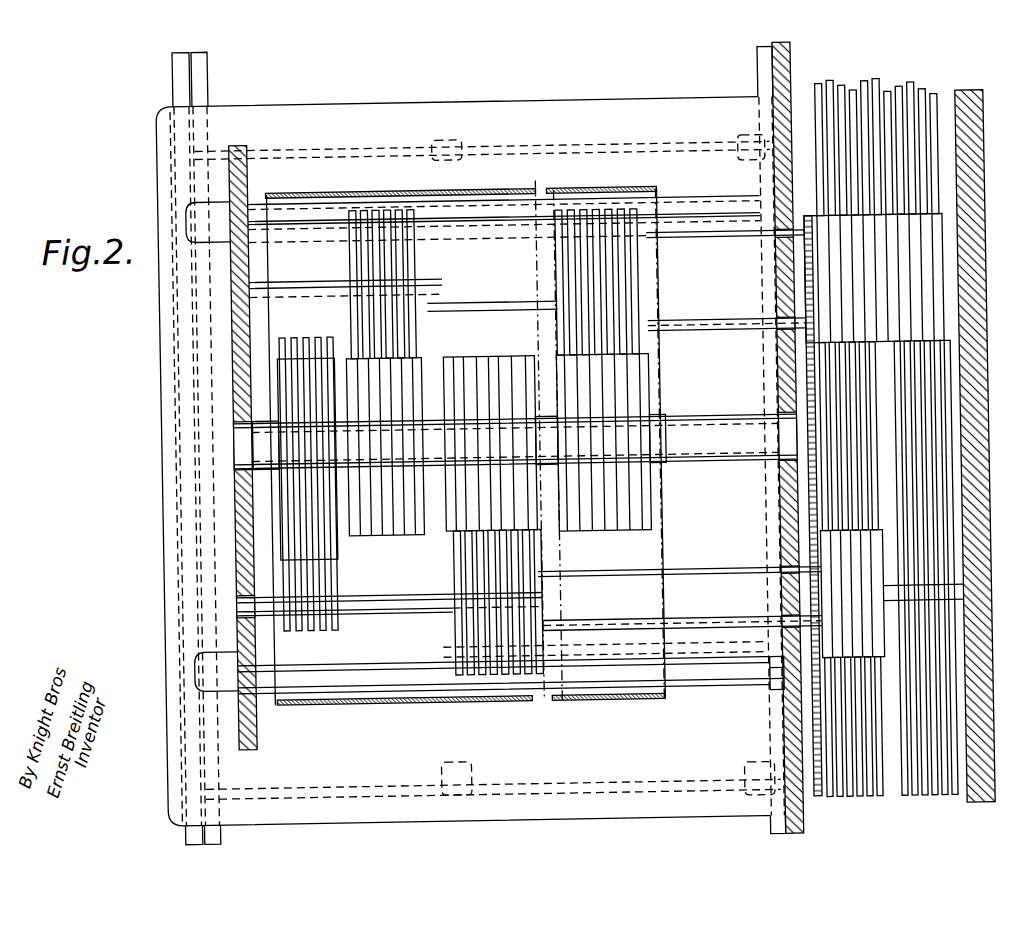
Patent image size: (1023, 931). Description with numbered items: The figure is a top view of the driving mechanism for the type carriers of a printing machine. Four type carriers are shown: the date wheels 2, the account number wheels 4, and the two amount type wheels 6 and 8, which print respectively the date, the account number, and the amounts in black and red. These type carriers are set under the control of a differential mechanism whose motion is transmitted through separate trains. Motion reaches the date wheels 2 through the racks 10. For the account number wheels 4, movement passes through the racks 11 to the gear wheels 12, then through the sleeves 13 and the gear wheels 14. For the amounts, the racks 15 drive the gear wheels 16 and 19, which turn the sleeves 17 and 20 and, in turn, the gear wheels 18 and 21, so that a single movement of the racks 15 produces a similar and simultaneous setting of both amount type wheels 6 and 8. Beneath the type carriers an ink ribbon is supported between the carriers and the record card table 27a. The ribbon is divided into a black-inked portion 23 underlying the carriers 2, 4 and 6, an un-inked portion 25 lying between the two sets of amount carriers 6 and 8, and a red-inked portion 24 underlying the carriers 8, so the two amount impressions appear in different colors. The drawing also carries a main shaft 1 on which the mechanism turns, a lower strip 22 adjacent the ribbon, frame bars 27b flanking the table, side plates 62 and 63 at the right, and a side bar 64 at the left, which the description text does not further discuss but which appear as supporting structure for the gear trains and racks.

The main drive shaft 1 is at (240, 445).
The type carrier 2 is at (308, 485).
The type carrier 4 is at (384, 364).
The type carrier 6 is at (493, 529).
The type carrier 8 is at (602, 361).
The racks 10 is at (284, 627).
The racks 11 is at (898, 802).
The gear wheels 12 is at (932, 236).
The sleeves 13 is at (432, 303).
The gear wheels 14 is at (417, 207).
The racks 15 is at (823, 802).
The gear wheels 16 is at (818, 578).
The sleeves 17 is at (716, 573).
The gear wheels 18 is at (455, 674).
The gear wheels 19 is at (812, 250).
The sleeves 20 is at (701, 327).
The gear wheels 21 is at (640, 210).
The lower cover strip 22 is at (582, 703).
The ribbon portion 23 is at (475, 188).
The ribbon portion 24 is at (645, 188).
The ribbon portion 25 is at (541, 188).
The record card table 27a is at (166, 365).
The frame side bars 27b is at (206, 104).
The side plate 62 is at (985, 405).
The side plate 63 is at (786, 92).
The side bar 64 is at (180, 93).